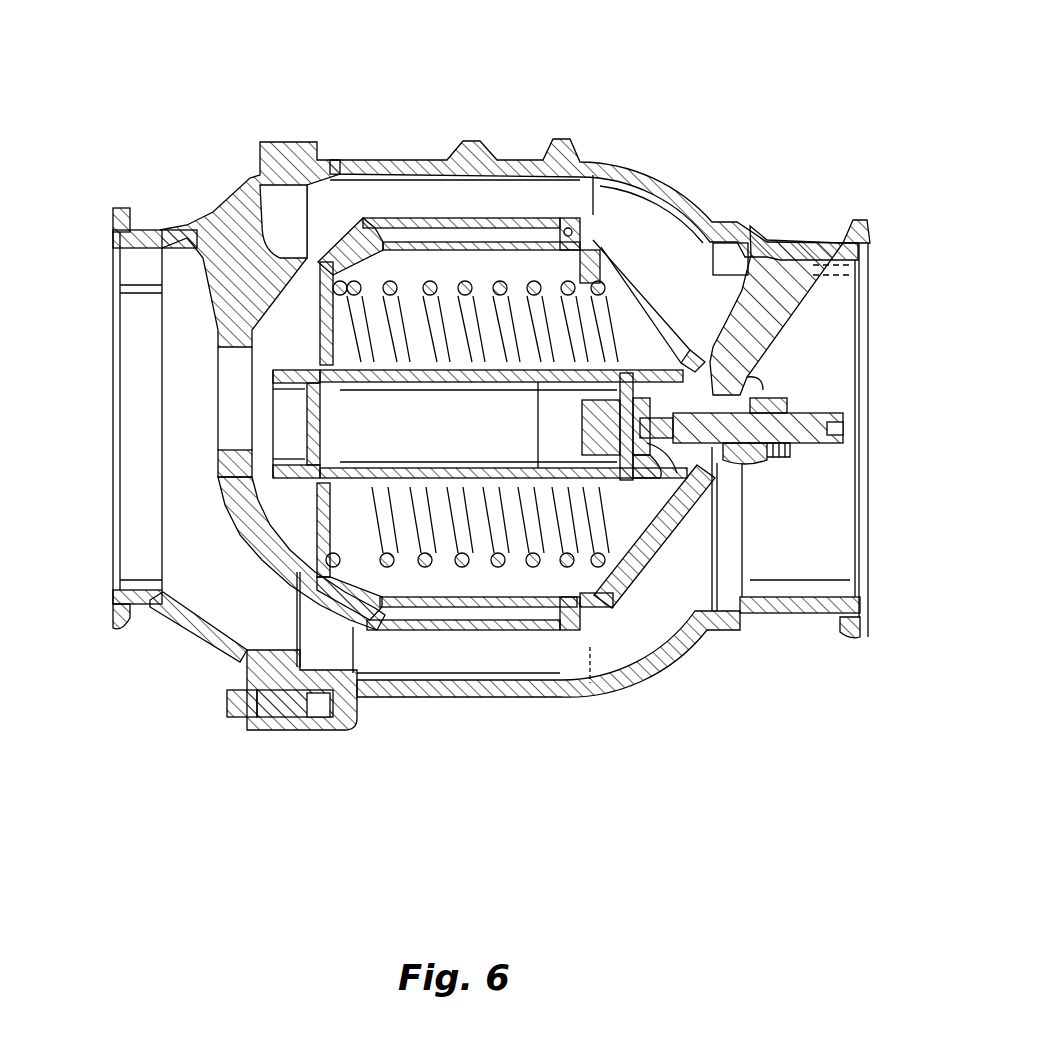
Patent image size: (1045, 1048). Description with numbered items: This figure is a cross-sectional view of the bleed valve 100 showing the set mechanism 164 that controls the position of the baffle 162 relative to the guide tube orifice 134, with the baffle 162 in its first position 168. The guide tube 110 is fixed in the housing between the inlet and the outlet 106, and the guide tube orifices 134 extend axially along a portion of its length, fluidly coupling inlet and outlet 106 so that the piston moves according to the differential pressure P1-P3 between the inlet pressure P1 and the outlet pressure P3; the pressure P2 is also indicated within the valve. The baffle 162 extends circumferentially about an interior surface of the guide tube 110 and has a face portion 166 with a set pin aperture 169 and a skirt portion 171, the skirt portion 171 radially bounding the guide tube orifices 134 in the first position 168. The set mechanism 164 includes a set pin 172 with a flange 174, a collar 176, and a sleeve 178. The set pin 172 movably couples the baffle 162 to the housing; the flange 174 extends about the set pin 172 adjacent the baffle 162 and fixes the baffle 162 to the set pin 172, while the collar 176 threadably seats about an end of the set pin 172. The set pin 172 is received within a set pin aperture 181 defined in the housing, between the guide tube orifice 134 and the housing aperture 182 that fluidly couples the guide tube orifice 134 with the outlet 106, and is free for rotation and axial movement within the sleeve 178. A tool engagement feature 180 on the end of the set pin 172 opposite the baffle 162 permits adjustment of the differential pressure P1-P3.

The bleed valve 100 is at (166, 41).
The outlet 106 is at (845, 335).
The guide tube 110 is at (303, 368).
The guide tube orifice 134 is at (640, 345).
The baffle 162 is at (567, 420).
The set mechanism 164 is at (358, 434).
The face portion 166 is at (650, 472).
The first position 168 is at (636, 305).
The set pin aperture 169 is at (668, 345).
The skirt portion 171 is at (582, 398).
The set pin 172 is at (760, 388).
The flange 174 is at (735, 570).
The collar 176 is at (578, 395).
The sleeve 178 is at (780, 410).
The tool engagement feature 180 is at (843, 425).
The set pin aperture 181 is at (745, 472).
The housing aperture 182 is at (745, 470).
The inlet pressure P1 is at (262, 423).
The chamber pressure P2 is at (480, 557).
The outlet pressure P3 is at (826, 490).